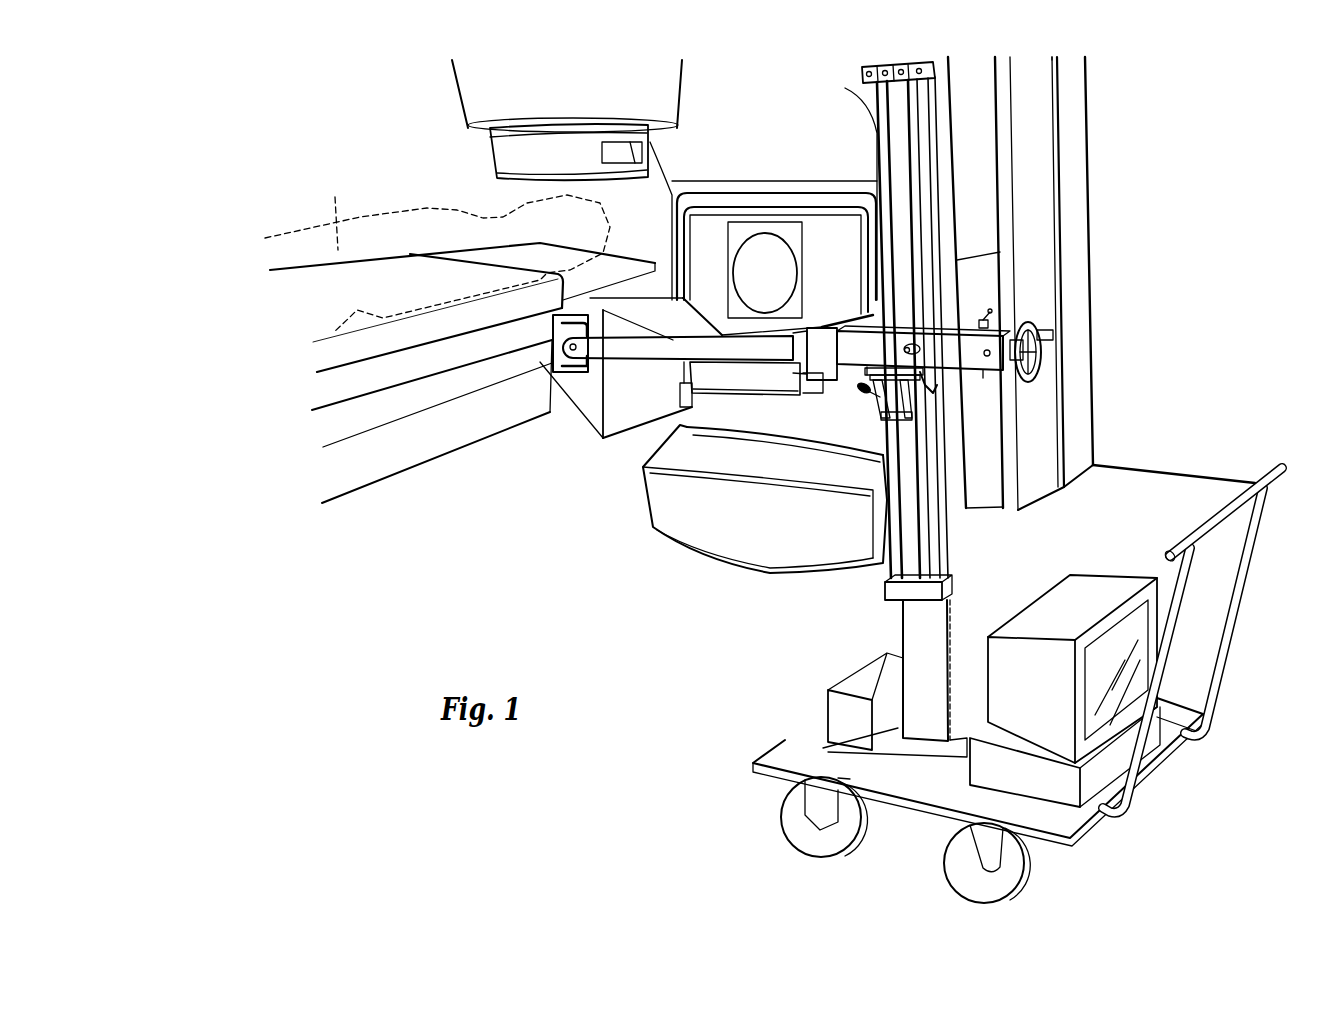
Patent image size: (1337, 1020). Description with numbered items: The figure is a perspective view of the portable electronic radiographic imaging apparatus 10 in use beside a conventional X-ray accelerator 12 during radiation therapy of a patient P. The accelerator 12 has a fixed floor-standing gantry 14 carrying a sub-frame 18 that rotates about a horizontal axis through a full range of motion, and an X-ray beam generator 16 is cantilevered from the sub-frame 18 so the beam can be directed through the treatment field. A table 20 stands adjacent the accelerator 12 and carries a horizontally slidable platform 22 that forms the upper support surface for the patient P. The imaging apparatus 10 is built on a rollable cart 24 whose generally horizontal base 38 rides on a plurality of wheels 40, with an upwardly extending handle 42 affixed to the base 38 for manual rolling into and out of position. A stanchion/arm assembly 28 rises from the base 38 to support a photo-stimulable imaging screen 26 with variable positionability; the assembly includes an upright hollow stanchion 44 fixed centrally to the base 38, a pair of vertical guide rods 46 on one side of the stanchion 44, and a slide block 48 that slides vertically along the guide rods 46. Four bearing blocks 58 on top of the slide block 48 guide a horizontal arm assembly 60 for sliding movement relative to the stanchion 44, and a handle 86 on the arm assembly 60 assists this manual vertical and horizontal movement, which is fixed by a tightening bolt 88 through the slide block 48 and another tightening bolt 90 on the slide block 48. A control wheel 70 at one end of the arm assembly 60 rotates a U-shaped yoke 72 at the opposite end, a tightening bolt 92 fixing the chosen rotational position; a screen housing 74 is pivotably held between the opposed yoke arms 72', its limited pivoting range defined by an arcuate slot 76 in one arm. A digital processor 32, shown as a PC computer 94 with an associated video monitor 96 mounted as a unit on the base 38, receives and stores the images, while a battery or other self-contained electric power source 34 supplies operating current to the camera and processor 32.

The portable imaging apparatus 10 is at (740, 650).
The X-ray accelerator 12 is at (1100, 243).
The gantry 14 is at (1030, 83).
The X-ray beam generator 16 is at (492, 93).
The sub-frame 18 is at (697, 163).
The table 20 is at (390, 413).
The platform 22 is at (620, 262).
The rollable cart 24 is at (1004, 666).
The photo-stimulable imaging screen 26 is at (640, 290).
The stanchion/arm assembly 28 is at (953, 558).
The digital processor 32 is at (990, 770).
The electric power source 34 is at (845, 715).
The base 38 is at (887, 755).
The wheels 40 is at (1015, 877).
The handle 42 is at (1220, 518).
The stanchion 44 is at (933, 666).
The guide rods 46 is at (897, 565).
The slide block 48 is at (917, 410).
The bearing blocks 58 is at (867, 367).
The horizontal arm assembly 60 is at (983, 372).
The control wheel 70 is at (1052, 335).
The U-shaped yoke 72 is at (823, 339).
The yoke arms 72' is at (704, 329).
The screen housing 74 is at (598, 402).
The arcuate slot 76 is at (573, 327).
The handle 86 is at (902, 347).
The tightening bolt 88 is at (867, 393).
The tightening bolt 90 is at (933, 382).
The tightening bolt 92 is at (987, 320).
The PC computer 94 is at (1058, 788).
The video monitor 96 is at (1043, 708).
The patient P is at (333, 195).